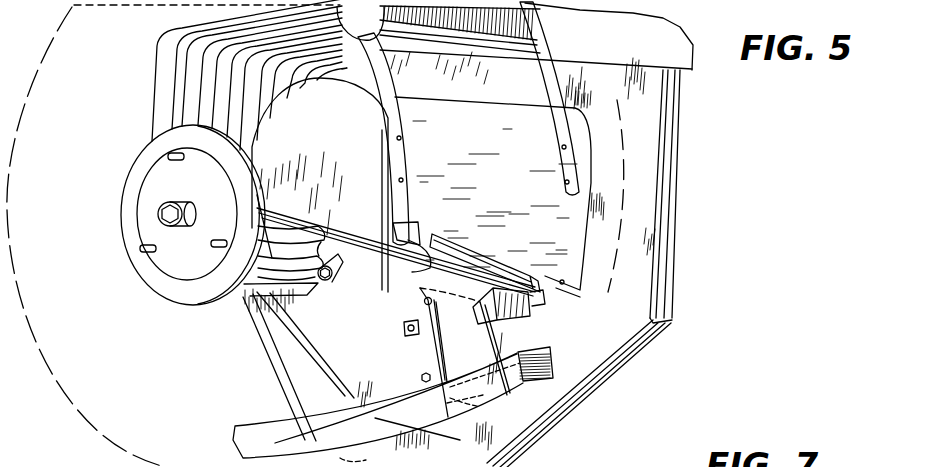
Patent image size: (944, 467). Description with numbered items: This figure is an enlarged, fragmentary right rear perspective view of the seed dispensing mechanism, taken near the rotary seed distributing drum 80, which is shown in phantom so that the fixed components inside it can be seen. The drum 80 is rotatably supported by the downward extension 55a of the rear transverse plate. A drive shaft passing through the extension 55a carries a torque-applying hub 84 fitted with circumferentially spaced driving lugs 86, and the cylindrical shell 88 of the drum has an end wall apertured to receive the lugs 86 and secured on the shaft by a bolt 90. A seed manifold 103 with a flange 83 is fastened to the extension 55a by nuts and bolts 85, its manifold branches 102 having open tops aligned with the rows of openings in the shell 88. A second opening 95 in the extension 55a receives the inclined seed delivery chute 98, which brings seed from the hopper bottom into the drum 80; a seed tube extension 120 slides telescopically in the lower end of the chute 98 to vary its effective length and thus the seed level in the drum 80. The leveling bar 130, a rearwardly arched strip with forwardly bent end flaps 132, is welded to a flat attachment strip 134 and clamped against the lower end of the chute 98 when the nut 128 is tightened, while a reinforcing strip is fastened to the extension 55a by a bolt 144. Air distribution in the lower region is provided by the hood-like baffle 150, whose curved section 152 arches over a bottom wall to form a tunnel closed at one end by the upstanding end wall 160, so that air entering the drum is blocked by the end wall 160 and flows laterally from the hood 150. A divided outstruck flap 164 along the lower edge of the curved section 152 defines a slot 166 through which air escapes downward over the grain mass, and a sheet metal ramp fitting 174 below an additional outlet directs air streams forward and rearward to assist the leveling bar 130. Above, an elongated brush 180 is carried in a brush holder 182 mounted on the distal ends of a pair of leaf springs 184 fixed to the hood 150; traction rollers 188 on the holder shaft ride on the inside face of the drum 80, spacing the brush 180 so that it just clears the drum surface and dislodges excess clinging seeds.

The downward extension of rear transverse plate 55a is at (633, 323).
The rotary seed distributing drum 80 is at (62, 382).
The flange 83 is at (365, 308).
The torque-applying hub 84 is at (155, 175).
The nuts and bolts 85 is at (306, 295).
The driving lugs 86 is at (168, 155).
The cylindrical shell 88 is at (365, 456).
The bolt 90 is at (160, 212).
The second opening 95 is at (424, 300).
The seed delivery chute 98 is at (434, 316).
The manifold branches 102 is at (182, 14).
The seed manifold 103 is at (153, 51).
The seed tube extension 120 is at (483, 405).
The nut 128 is at (405, 373).
The leveling bar 130 is at (254, 411).
The end flaps 132 is at (556, 349).
The attachment strip 134 is at (378, 362).
The bolt 144 is at (418, 337).
The hood-like baffle 150 is at (528, 195).
The curved section 152 is at (578, 229).
The end wall 160 is at (268, 174).
The outstruck flap 164 is at (410, 233).
The slot 166 is at (417, 262).
The ramp fitting 174 is at (520, 313).
The brush 180 is at (536, 16).
The brush holder 182 is at (487, 27).
The leaf springs 184 is at (406, 150).
The traction rollers 188 is at (387, 41).